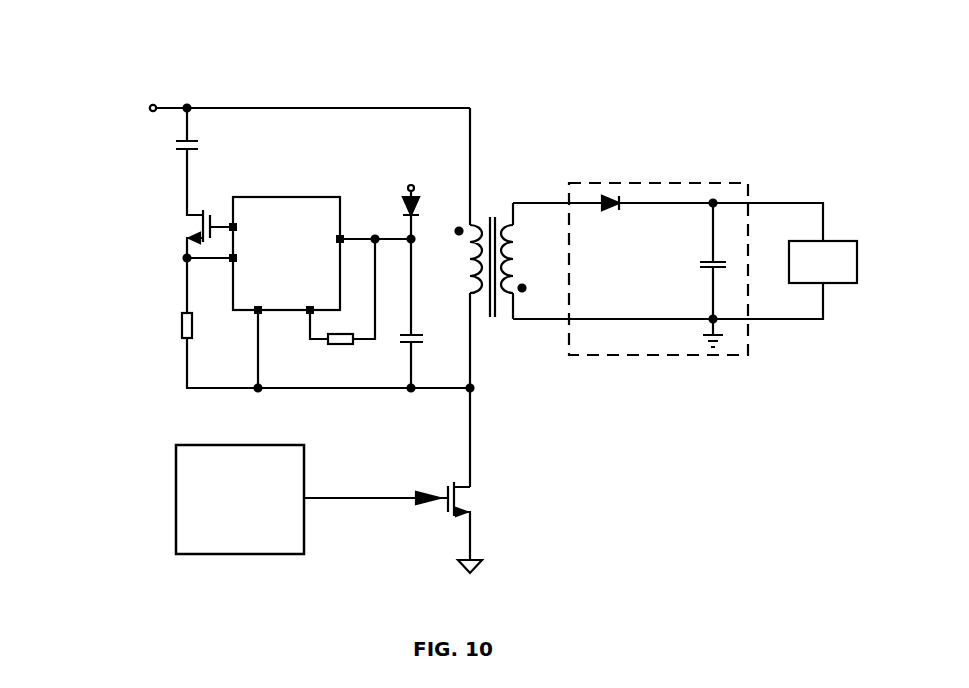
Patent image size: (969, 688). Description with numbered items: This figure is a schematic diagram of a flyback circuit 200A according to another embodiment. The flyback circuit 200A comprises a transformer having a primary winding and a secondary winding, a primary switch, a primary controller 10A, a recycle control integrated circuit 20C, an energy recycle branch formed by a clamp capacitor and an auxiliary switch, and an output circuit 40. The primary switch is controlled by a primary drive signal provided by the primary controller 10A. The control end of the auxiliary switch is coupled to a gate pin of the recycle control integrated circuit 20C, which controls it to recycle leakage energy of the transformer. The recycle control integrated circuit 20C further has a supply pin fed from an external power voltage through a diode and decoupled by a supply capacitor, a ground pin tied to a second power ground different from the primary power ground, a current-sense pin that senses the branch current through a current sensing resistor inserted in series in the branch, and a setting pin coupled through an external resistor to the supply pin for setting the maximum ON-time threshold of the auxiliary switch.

The flyback circuit 200A is at (489, 45).
The recycle control integrated circuit 20C is at (291, 197).
The output circuit 40 is at (598, 357).
The primary controller 10A is at (176, 494).